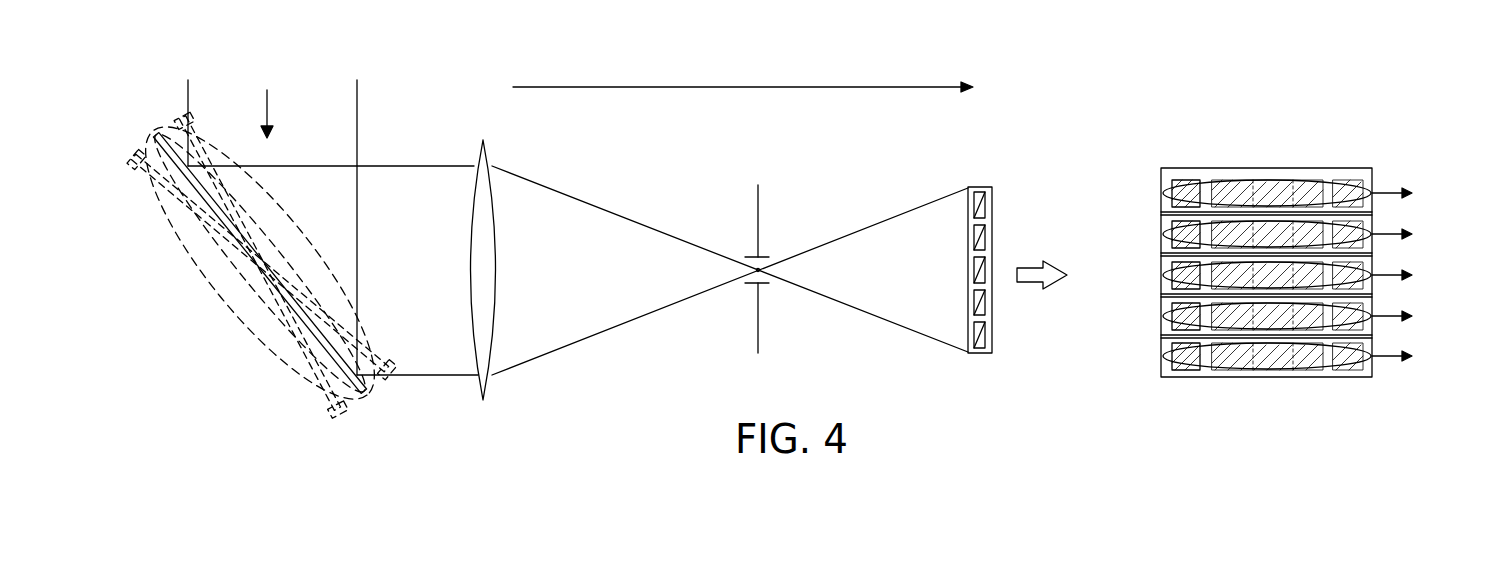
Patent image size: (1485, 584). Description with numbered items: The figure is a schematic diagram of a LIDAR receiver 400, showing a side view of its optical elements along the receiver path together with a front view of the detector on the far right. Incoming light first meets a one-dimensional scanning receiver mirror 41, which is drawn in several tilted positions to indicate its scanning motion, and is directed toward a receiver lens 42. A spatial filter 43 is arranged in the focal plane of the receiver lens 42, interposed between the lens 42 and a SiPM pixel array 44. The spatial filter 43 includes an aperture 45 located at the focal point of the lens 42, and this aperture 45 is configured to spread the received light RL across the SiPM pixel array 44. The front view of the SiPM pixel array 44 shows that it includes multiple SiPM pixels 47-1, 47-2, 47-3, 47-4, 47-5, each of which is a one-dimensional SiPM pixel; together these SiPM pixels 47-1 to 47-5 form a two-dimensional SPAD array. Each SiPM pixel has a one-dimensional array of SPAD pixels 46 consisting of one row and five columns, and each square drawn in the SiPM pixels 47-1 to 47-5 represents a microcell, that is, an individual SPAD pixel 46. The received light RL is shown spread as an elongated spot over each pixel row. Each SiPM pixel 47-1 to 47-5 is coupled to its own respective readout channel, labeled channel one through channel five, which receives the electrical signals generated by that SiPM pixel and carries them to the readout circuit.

The LIDAR receiver 400 is at (168, 48).
The 1D-scanning receiver mirror 41 is at (160, 133).
The receiver lens 42 is at (483, 140).
The spatial filter 43 is at (757, 206).
The SiPM pixel array 44 is at (978, 187).
The aperture 45 is at (780, 252).
The SPAD pixel 46 is at (1178, 180).
The received light RL is at (1330, 180).
The SiPM pixel 47-1 is at (1161, 180).
The SiPM pixel 47-2 is at (1161, 221).
The SiPM pixel 47-3 is at (1161, 262).
The SiPM pixel 47-4 is at (1161, 303).
The SiPM pixel 47-5 is at (1161, 344).